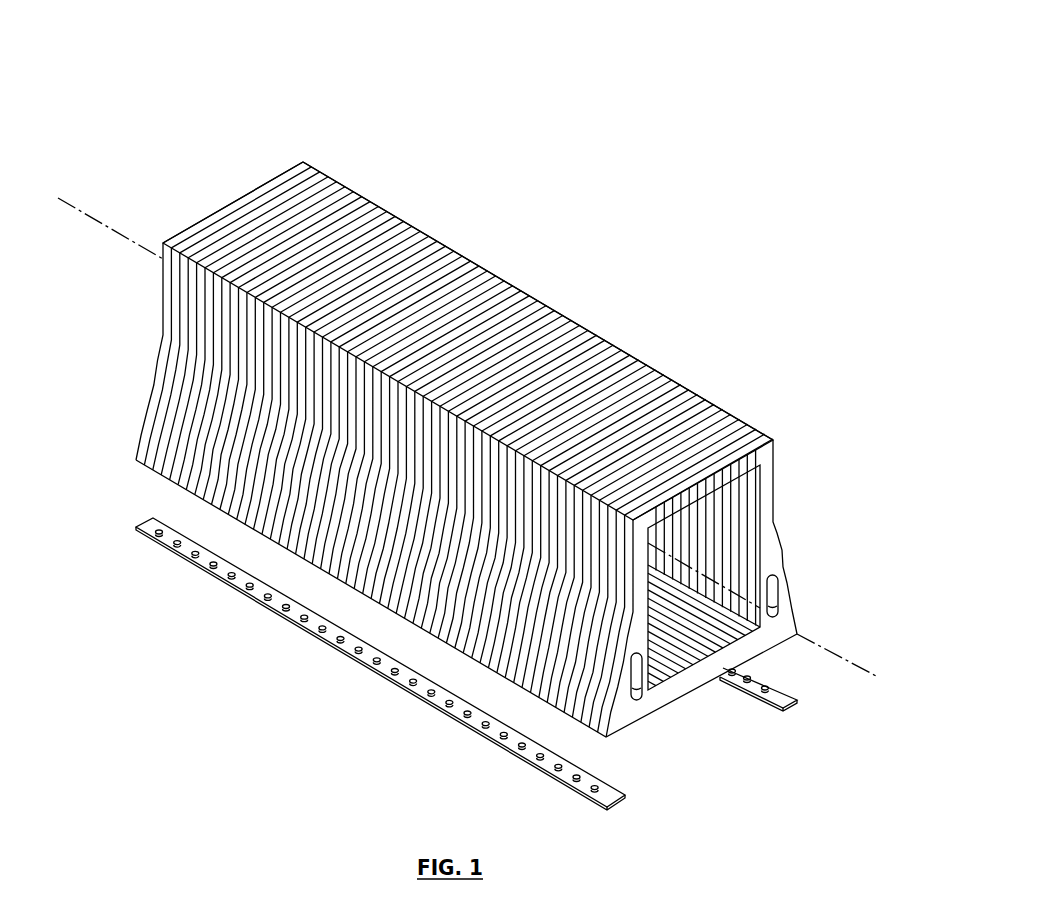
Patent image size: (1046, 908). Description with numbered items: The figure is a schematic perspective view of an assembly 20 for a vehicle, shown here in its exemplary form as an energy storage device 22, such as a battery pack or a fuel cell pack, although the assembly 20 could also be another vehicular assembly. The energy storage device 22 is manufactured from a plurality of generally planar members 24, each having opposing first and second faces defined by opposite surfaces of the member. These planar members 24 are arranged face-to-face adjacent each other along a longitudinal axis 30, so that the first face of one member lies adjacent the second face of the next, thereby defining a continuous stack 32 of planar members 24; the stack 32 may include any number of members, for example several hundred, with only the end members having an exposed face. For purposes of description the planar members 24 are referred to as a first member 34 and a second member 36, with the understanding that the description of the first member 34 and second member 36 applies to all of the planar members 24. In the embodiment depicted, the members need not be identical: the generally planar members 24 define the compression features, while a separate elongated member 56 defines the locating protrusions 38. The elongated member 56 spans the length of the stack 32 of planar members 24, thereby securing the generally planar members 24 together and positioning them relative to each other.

The assembly 20 is at (562, 83).
The energy storage device 22 is at (595, 283).
The planar members 24 is at (738, 418).
The longitudinal axis 30 is at (112, 229).
The stack 32 is at (461, 252).
The first member 34 is at (373, 202).
The second member 36 is at (369, 200).
The locating protrusions 38 is at (477, 733).
The elongated member 56 is at (617, 805).